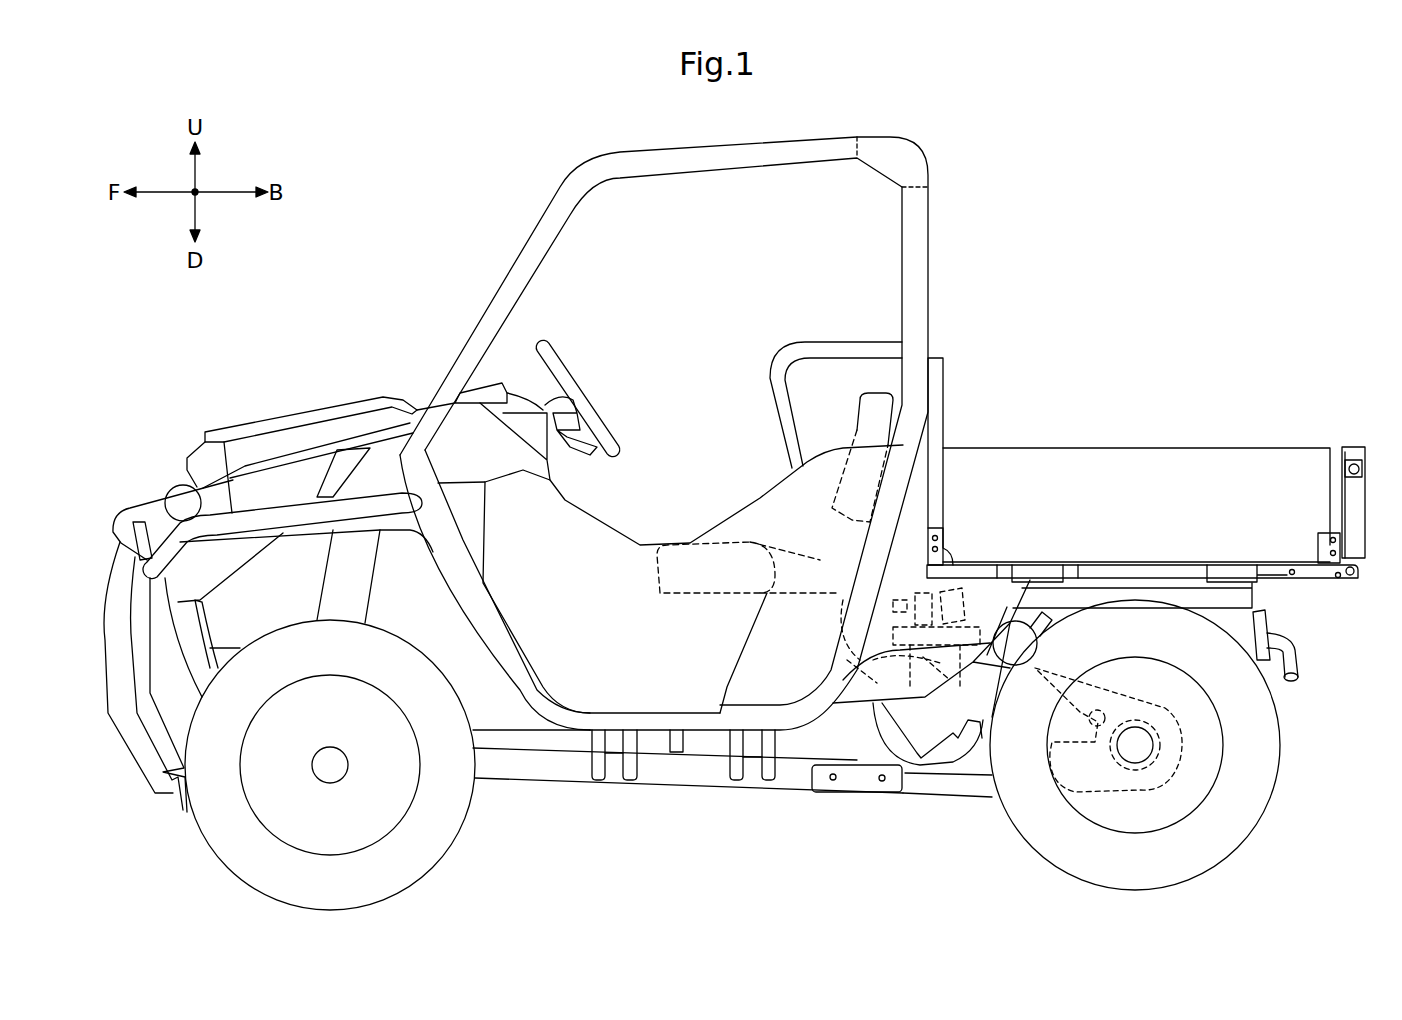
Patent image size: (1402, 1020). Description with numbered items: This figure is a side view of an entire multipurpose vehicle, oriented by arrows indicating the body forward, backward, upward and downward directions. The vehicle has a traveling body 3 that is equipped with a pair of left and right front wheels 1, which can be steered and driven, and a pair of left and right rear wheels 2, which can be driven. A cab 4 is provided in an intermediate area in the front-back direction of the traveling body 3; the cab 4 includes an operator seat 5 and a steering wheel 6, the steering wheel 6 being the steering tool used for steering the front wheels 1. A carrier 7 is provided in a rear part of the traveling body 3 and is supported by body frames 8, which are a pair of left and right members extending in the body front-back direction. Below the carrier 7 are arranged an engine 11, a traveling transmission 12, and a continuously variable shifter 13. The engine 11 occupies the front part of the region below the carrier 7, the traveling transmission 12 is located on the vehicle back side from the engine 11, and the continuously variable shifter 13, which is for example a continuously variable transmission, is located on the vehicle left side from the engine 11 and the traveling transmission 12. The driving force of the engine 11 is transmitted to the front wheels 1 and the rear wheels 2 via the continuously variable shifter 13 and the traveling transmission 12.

The front wheels 1 is at (405, 855).
The rear wheels 2 is at (1213, 855).
The traveling body 3 is at (662, 785).
The cab 4 is at (481, 289).
The operator seat 5 is at (851, 427).
The steering wheel 6 is at (590, 393).
The carrier 7 is at (1125, 448).
The body frames 8 is at (1237, 593).
The engine 11 is at (945, 540).
The traveling transmission 12 is at (1125, 793).
The continuously variable shifter 13 is at (928, 723).